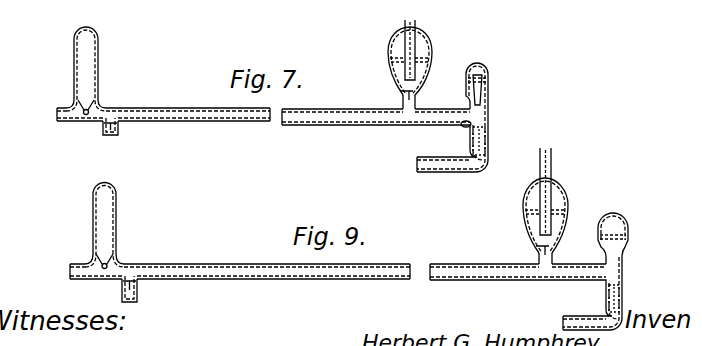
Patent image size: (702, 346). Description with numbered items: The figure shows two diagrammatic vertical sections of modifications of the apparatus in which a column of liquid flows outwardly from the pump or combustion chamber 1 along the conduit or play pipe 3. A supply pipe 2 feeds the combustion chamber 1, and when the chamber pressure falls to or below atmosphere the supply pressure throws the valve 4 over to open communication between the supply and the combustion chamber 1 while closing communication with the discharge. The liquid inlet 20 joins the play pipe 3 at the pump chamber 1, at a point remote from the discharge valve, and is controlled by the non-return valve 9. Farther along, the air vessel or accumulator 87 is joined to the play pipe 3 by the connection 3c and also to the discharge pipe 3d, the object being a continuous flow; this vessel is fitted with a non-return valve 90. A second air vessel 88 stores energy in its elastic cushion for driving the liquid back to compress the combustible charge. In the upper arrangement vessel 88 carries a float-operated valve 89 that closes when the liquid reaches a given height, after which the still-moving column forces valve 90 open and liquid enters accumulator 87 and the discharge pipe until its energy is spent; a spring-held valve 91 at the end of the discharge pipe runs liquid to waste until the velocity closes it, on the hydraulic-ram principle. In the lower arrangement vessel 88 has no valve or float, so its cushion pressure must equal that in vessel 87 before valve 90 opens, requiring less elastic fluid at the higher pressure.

In FIG. 7, the combustion chamber 1 is at (88, 62).
In FIG. 9, the combustion chamber 1 is at (108, 203).
In FIG. 7, the supply pipe 2 is at (67, 116).
In FIG. 9, the supply pipe 2 is at (75, 270).
In FIG. 7, the discharge pipe 3 is at (313, 117).
In FIG. 9, the discharge pipe 3 is at (305, 268).
In FIG. 7, the connection 3c is at (414, 105).
In FIG. 9, the connection 3c is at (535, 262).
In FIG. 7, the discharge pipe 3d is at (417, 22).
In FIG. 9, the discharge pipe 3d is at (553, 150).
In FIG. 7, the valve 4 is at (100, 105).
In FIG. 9, the valve 4 is at (104, 262).
In FIG. 7, the non return valve 9 is at (138, 110).
In FIG. 9, the non return valve 9 is at (130, 270).
In FIG. 7, the liquid inlet 20 is at (117, 131).
In FIG. 9, the liquid inlet 20 is at (134, 293).
In FIG. 7, the air vessel 87 is at (430, 36).
In FIG. 9, the air vessel 87 is at (556, 188).
In FIG. 7, the second air vessel 88 is at (490, 77).
In FIG. 9, the second air vessel 88 is at (600, 232).
In FIG. 7, the valve 89 is at (489, 112).
In FIG. 7, the non-return valve 90 is at (400, 91).
In FIG. 9, the non-return valve 90 is at (536, 246).
In FIG. 7, the valve 91 is at (462, 126).